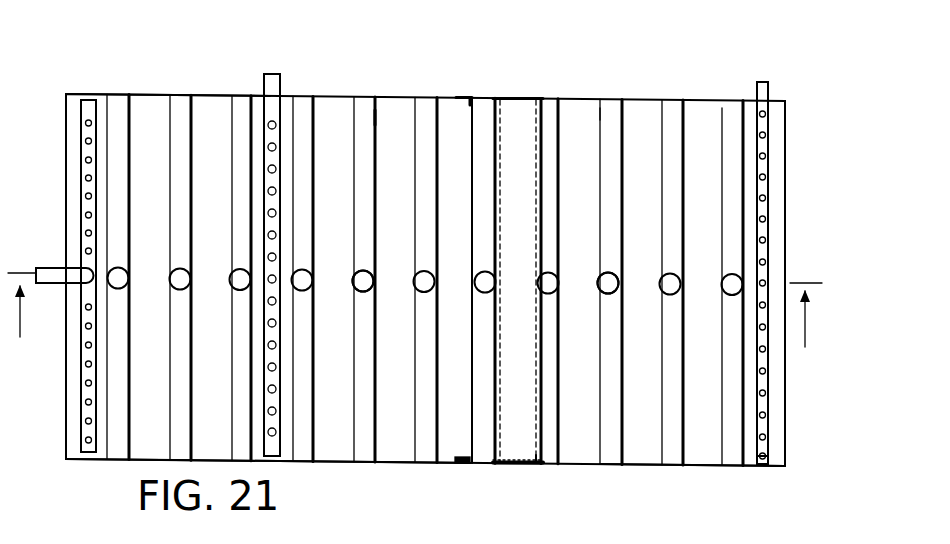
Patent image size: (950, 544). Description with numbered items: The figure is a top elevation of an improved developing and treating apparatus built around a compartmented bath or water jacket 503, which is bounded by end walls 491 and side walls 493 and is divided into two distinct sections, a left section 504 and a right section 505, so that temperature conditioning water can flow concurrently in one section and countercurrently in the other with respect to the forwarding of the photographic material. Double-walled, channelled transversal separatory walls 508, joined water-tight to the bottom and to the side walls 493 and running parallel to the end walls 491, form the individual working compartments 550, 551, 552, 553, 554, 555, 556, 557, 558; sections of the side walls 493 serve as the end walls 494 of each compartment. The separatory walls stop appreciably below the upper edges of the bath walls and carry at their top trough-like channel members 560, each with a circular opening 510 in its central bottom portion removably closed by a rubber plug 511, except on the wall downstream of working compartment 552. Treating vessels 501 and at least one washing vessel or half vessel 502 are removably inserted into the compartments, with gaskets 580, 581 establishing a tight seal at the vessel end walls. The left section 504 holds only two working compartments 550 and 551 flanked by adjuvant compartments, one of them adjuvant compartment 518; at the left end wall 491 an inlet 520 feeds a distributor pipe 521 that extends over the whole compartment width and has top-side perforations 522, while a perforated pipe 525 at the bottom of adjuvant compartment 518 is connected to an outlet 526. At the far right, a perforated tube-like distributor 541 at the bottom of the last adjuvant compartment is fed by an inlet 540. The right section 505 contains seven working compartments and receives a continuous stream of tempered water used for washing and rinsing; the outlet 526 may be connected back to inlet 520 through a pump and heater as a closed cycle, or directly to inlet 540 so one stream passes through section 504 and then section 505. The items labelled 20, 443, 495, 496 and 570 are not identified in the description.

The section line 20 is at (415, 323).
The bottom rail 443 is at (635, 466).
The end walls 491 is at (65, 178).
The side walls 493 is at (145, 93).
The end walls of compartment 494 is at (325, 463).
The bottom bar of partition 495 is at (500, 470).
The stop block 496 is at (456, 466).
The treating vessels 501 is at (535, 466).
The washing vessel 502 is at (470, 97).
The compartmented bath 503 is at (105, 468).
The left section 504 is at (190, 74).
The right section 505 is at (640, 76).
The transversal separatory walls 508 is at (380, 118).
The circular opening 510 is at (310, 273).
The rubber plug 511 is at (370, 273).
The adjuvant compartment 518 is at (262, 95).
The inlet 520 is at (44, 283).
The distributor pipe 521 is at (85, 426).
The perforations 522 is at (88, 385).
The perforated pipe 525 is at (72, 268).
The outlet 526 is at (280, 76).
The inlet 540 is at (768, 84).
The perforated tube-like distributor 541 is at (760, 462).
The working compartment 550 is at (158, 277).
The working compartment 551 is at (218, 277).
The working compartment 552 is at (309, 279).
The working compartment 553 is at (391, 279).
The working compartment 554 is at (451, 279).
The working compartment 555 is at (510, 280).
The working compartment 556 is at (584, 281).
The working compartment 557 is at (651, 282).
The working compartment 558 is at (713, 283).
The trough-like channel members 560 is at (600, 112).
The strip apertures 570 is at (775, 416).
The gasket 580 is at (525, 97).
The gasket 581 is at (456, 97).